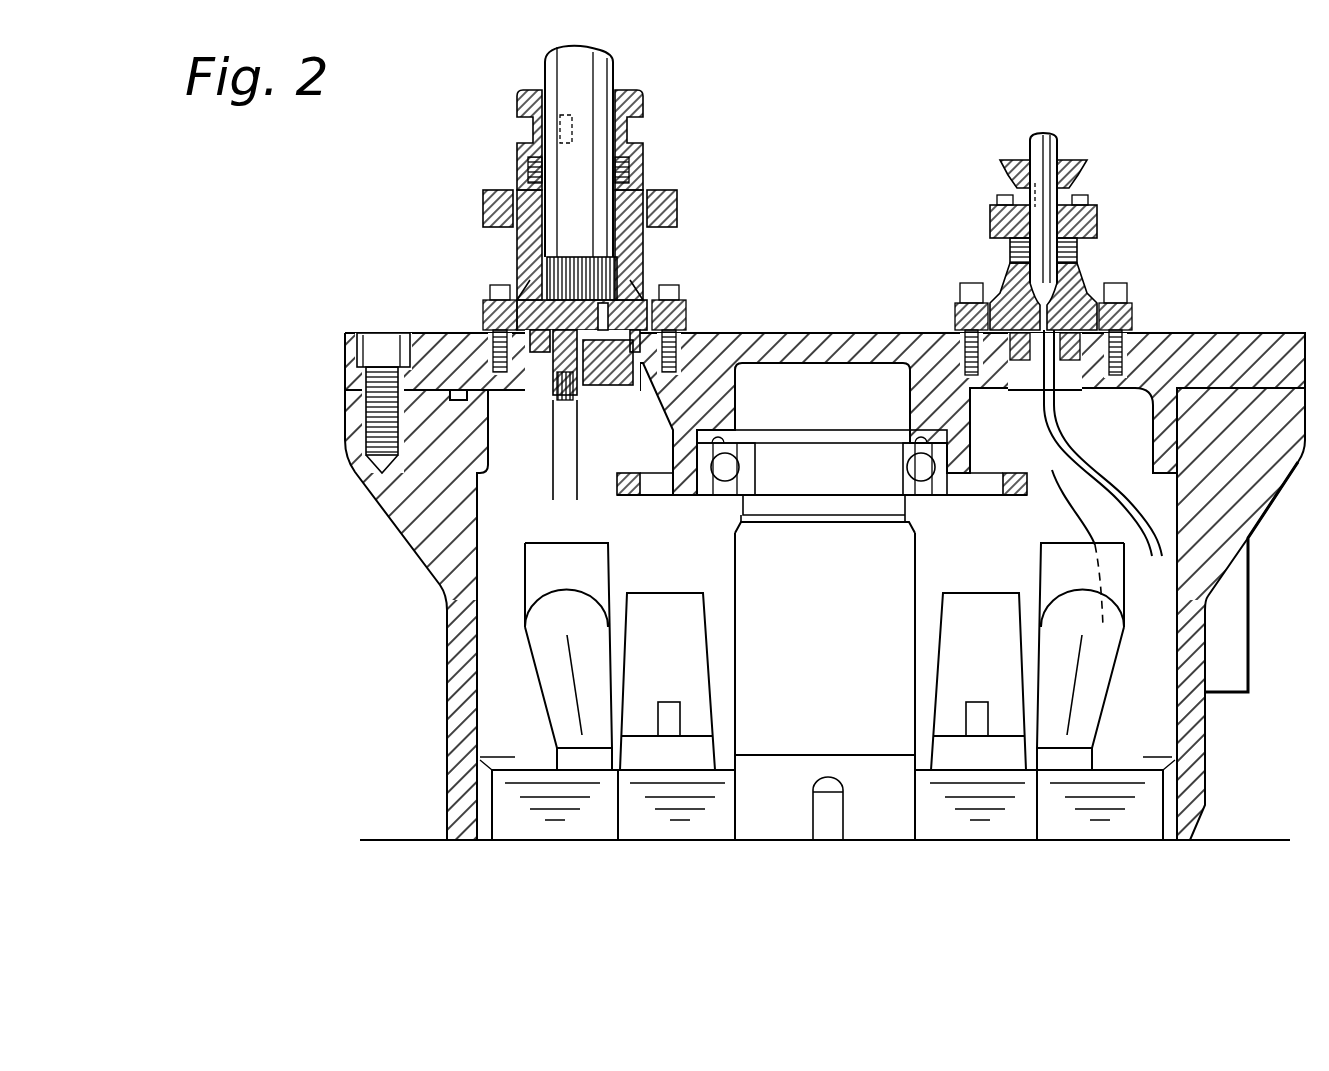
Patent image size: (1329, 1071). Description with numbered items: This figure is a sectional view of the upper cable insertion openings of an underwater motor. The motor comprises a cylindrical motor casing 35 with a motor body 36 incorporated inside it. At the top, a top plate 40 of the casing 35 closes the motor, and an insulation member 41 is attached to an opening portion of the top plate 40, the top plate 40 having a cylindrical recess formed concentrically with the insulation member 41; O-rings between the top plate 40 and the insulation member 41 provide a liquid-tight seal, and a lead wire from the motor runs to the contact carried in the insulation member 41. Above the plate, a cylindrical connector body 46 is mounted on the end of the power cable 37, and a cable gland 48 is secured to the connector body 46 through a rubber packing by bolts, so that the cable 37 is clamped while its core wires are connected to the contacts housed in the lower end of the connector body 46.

The motor casing 35 is at (1258, 505).
The motor body 36 is at (506, 556).
The power cable 37 is at (600, 76).
The top plate 40 is at (1198, 342).
The insulation member 41 is at (600, 372).
The connector body 46 is at (648, 252).
The cable gland 48 is at (640, 125).